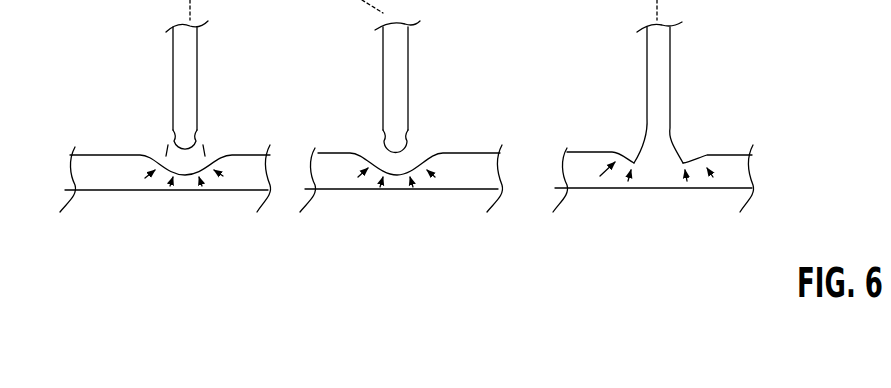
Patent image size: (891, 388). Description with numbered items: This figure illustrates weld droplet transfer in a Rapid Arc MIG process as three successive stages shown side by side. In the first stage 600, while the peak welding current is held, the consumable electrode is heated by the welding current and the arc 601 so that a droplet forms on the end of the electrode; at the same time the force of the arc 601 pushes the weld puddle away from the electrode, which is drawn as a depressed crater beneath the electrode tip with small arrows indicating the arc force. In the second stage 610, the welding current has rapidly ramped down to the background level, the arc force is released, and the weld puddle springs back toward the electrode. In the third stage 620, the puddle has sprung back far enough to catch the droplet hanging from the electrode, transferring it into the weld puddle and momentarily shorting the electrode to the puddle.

The first stage of droplet transfer 600 is at (122, 227).
The arc 601 is at (166, 152).
The puddle spring-back stage 610 is at (455, 260).
The droplet catching stage 620 is at (667, 272).